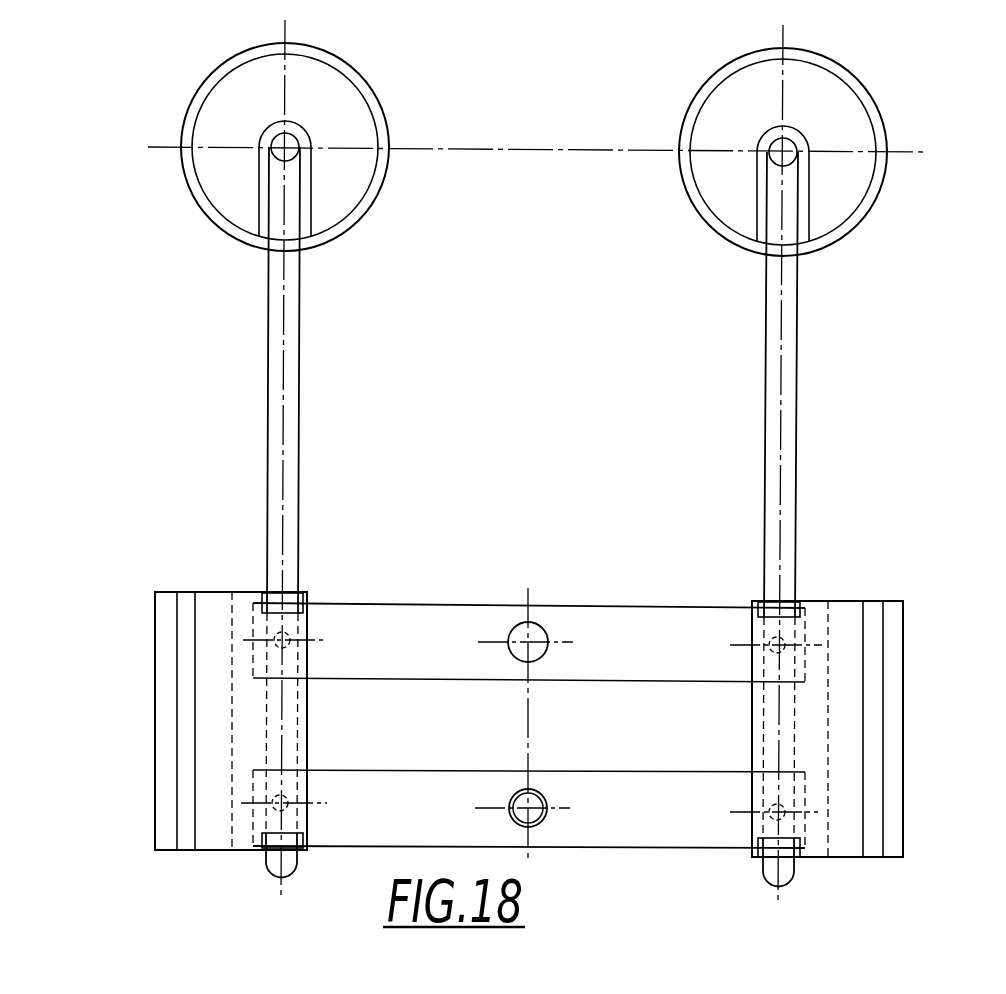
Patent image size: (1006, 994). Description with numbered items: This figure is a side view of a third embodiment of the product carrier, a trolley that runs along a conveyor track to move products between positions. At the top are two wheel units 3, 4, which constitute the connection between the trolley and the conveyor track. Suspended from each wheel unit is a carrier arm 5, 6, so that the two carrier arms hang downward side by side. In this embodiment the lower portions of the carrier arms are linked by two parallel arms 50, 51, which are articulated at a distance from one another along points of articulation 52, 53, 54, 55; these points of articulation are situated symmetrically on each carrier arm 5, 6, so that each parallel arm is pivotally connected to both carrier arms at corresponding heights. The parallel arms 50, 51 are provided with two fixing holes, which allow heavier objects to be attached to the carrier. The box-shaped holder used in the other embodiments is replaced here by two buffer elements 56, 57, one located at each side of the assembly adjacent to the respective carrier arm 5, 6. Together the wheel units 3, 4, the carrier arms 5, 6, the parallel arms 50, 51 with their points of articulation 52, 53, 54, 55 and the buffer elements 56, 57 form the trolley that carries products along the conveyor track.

The wheel unit 3 is at (337, 264).
The wheel unit 4 is at (733, 264).
The carrier arm 5 is at (300, 414).
The carrier arm 6 is at (767, 425).
The parallel arm 50 is at (452, 633).
The parallel arm 51 is at (642, 817).
The point of articulation 52 is at (287, 636).
The point of articulation 53 is at (283, 800).
The point of articulation 54 is at (533, 637).
The point of articulation 55 is at (533, 805).
The buffer element 56 is at (163, 643).
The buffer element 57 is at (893, 737).